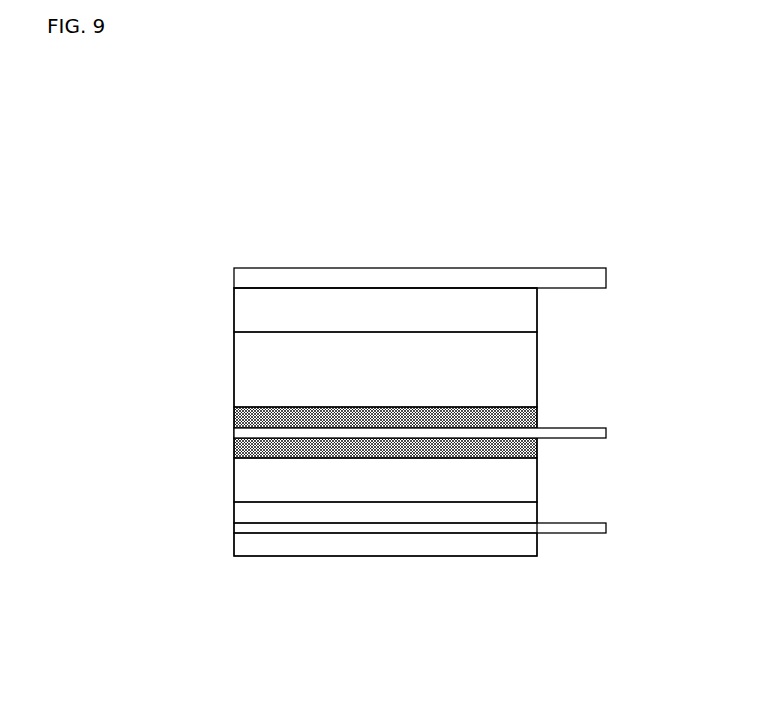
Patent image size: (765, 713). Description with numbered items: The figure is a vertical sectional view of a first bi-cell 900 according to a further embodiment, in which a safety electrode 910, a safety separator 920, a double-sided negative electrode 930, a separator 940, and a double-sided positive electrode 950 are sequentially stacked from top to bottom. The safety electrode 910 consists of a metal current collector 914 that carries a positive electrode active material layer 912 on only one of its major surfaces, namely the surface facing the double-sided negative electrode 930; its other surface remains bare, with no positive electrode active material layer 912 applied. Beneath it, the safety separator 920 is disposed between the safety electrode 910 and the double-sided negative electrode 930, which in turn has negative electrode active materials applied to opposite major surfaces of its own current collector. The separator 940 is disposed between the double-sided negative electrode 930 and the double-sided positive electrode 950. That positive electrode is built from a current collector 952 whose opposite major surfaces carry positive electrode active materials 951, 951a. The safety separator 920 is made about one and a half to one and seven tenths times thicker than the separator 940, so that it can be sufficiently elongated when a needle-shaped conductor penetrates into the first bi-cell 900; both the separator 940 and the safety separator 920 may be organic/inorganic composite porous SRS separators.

The first bi-cell 900 is at (280, 141).
The safety electrode 910 is at (97, 229).
The metal current collector 914 is at (234, 280).
The positive electrode active material layer 912 is at (234, 312).
The safety separator 920 is at (537, 370).
The double-sided negative electrode 930 is at (222, 408).
The separator 940 is at (537, 477).
The double-sided positive electrode 950 is at (80, 558).
The positive electrode active material 951 is at (234, 514).
The current collector 952 is at (234, 526).
The positive electrode active material 951a is at (248, 556).